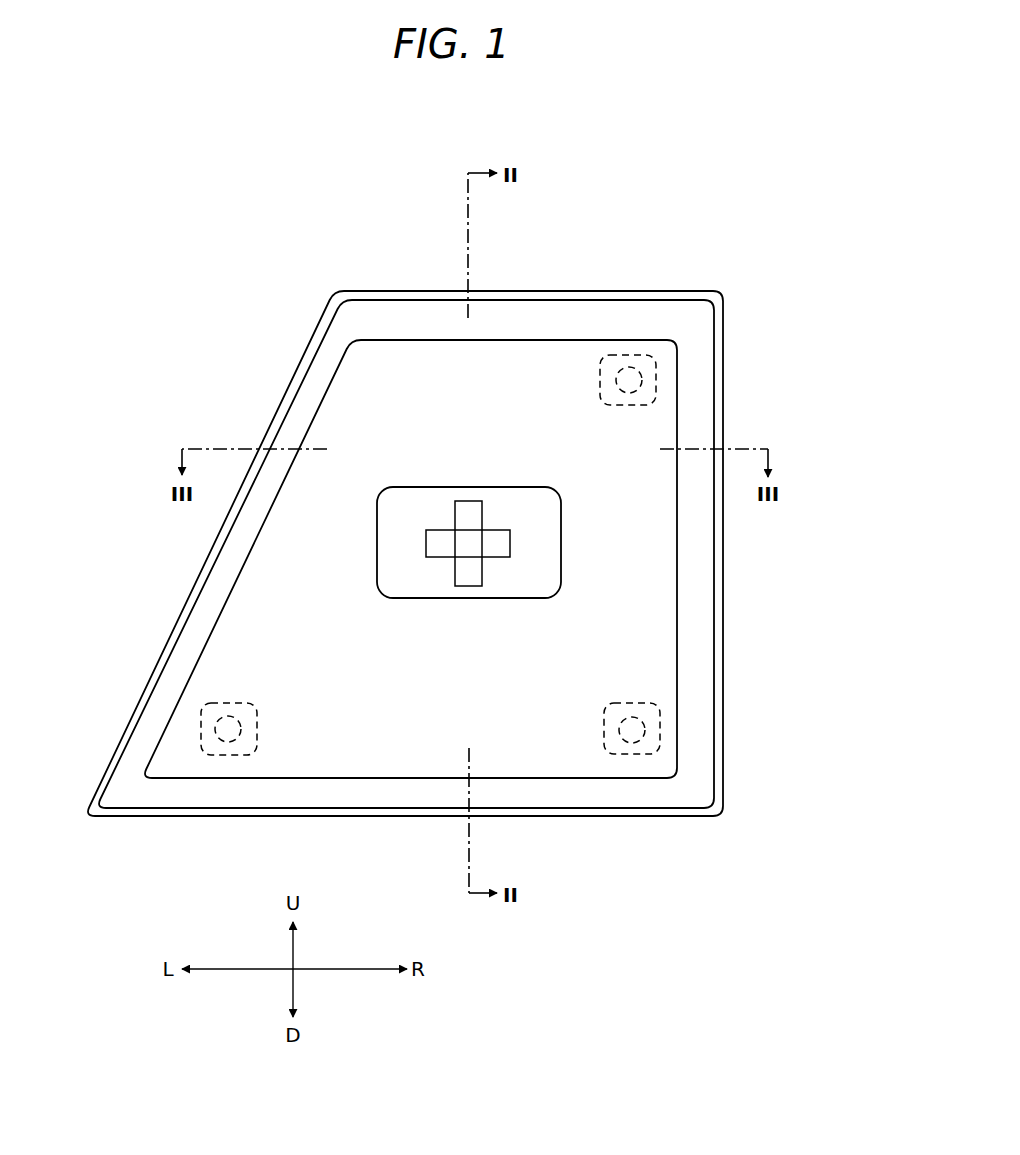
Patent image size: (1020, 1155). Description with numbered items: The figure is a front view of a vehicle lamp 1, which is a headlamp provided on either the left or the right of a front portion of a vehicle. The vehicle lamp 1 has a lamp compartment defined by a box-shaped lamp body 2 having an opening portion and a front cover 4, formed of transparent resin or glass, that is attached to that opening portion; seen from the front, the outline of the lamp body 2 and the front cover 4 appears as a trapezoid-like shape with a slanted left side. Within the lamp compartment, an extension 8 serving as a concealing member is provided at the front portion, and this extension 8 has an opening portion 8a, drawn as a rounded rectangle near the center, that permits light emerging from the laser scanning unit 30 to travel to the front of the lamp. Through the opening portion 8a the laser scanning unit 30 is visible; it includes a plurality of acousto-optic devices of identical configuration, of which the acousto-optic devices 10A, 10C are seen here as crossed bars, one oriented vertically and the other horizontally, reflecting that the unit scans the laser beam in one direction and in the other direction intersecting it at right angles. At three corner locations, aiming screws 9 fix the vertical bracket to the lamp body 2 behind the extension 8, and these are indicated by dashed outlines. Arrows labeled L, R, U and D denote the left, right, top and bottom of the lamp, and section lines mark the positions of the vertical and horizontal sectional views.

The vehicle lamp 1 is at (673, 186).
The lamp body 2 is at (365, 290).
The front cover 4 is at (421, 299).
The extension 8 is at (340, 417).
The opening portion 8a is at (506, 595).
The aiming screws 9 is at (629, 355).
The acousto-optic device 10A is at (462, 572).
The acousto-optic device 10C is at (426, 543).
The laser scanning unit 30 is at (421, 520).